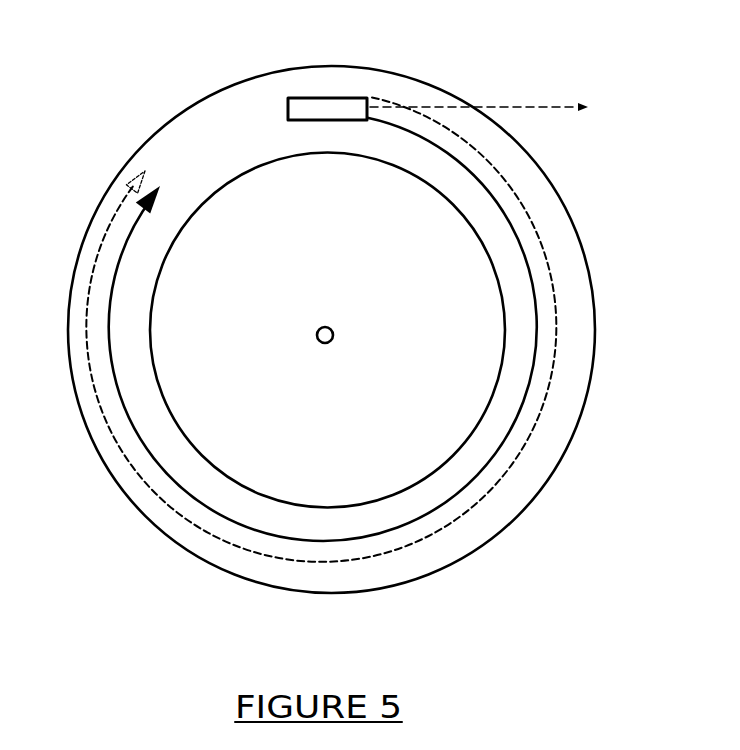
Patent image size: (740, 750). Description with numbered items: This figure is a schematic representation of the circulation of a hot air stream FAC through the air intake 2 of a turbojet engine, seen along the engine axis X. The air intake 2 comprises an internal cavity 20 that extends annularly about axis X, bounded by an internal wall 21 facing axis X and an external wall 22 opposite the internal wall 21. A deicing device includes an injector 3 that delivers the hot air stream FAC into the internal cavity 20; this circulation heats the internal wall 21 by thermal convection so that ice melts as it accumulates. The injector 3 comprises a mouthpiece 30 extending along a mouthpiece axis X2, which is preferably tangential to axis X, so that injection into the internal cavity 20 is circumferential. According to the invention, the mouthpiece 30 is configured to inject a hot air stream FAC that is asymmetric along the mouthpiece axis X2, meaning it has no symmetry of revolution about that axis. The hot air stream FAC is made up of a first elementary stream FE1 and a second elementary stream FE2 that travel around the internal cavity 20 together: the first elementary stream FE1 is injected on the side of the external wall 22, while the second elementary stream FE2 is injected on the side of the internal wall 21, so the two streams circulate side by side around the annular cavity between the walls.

The air intake 2 is at (624, 260).
The injector 3 is at (282, 88).
The internal cavity 20 is at (237, 150).
The internal wall 21 is at (435, 190).
The external wall 22 is at (242, 579).
The mouthpiece 30 is at (322, 98).
The axis X is at (325, 316).
The mouthpiece axis X2 is at (494, 108).
The first elementary stream FE1 is at (212, 523).
The second elementary stream FE2 is at (183, 498).
The hot air stream FAC is at (142, 648).